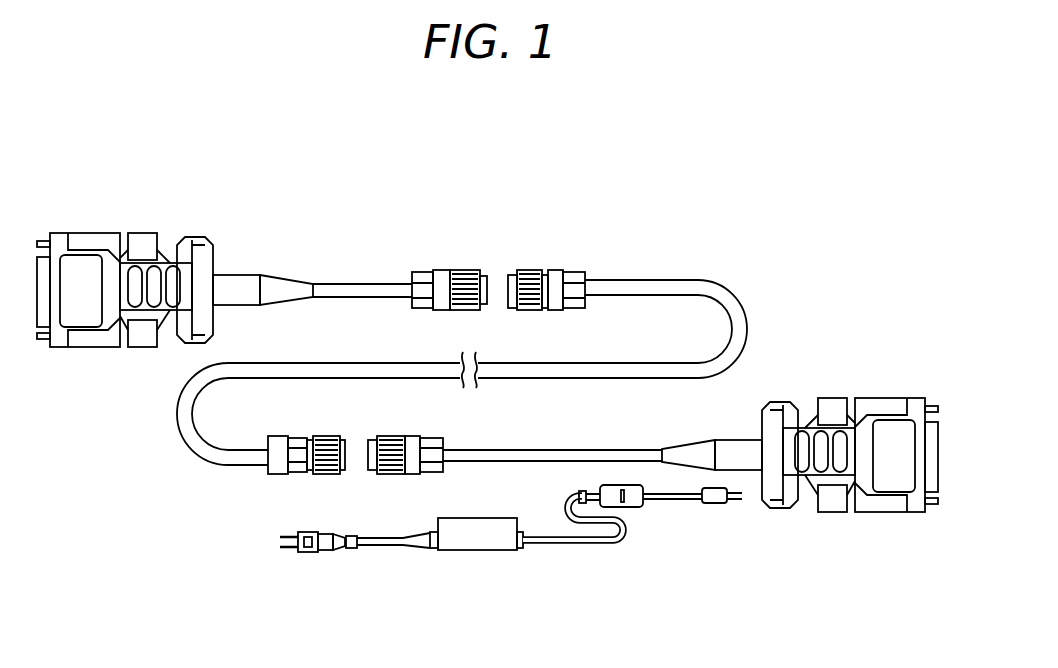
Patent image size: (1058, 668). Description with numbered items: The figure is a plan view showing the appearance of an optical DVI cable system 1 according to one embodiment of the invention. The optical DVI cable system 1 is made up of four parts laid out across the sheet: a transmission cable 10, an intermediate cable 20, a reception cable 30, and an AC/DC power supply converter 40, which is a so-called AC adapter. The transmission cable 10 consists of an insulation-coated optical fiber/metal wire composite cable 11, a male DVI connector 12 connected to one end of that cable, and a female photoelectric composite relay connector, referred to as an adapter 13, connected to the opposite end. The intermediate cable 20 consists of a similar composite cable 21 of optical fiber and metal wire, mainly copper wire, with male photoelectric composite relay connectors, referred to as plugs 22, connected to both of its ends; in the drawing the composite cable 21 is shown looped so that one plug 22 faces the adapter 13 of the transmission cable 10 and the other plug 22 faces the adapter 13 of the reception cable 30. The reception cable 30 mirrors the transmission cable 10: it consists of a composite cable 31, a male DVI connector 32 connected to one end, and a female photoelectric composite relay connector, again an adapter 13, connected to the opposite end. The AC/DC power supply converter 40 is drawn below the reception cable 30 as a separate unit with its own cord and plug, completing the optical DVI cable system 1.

The optical DVI cable system 1 is at (680, 195).
The transmission cable 10 is at (279, 260).
The composite cable 11 is at (358, 285).
The male DVI connector 12 is at (97, 234).
The female photoelectric composite relay connector 13 is at (412, 303).
The intermediate cable 20 is at (722, 276).
The composite cable 21 is at (741, 303).
The male photoelectric composite relay connector 22 is at (557, 272).
The reception cable 30 is at (677, 434).
The composite cable 31 is at (471, 449).
The male DVI connector 32 is at (880, 512).
The AC/DC power supply converter 40 is at (488, 552).